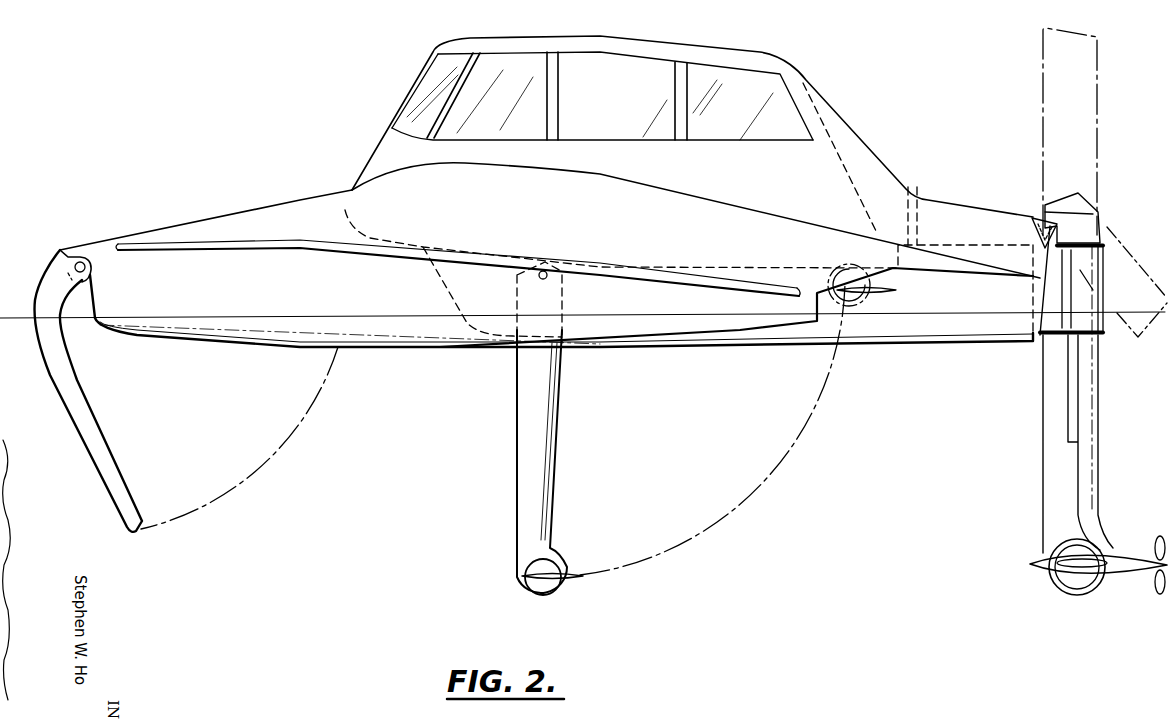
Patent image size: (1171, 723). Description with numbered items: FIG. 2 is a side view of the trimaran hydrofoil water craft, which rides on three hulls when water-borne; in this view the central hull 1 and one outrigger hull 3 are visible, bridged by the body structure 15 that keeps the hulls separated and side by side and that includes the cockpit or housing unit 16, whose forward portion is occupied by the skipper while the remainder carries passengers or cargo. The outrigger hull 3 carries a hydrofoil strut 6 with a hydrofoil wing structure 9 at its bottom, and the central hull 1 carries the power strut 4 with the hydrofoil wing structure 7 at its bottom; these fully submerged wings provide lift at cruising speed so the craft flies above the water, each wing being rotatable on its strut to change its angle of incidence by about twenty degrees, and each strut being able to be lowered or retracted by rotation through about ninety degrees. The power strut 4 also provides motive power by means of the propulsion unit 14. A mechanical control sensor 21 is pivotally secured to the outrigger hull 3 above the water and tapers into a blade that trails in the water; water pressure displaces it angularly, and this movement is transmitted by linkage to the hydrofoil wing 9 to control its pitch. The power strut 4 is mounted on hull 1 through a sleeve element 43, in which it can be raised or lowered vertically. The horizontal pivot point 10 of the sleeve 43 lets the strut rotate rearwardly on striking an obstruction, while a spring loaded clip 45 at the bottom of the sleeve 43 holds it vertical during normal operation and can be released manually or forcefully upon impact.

The hull 1 is at (896, 327).
The hull 3 is at (403, 332).
The hydrofoil strut 4 is at (1060, 383).
The hydrofoil strut 6 is at (537, 455).
The hydrofoil wing structure 7 is at (1038, 568).
The hydrofoil wing structure 9 is at (573, 573).
The support structure 10 is at (1025, 232).
The propulsion unit 14 is at (1127, 560).
The body structure 15 is at (417, 172).
The cockpit or housing unit 16 is at (686, 53).
The mechanical control sensor 21 is at (117, 487).
The sleeve element 43 is at (1080, 233).
The spring loaded clip 45 is at (1033, 337).